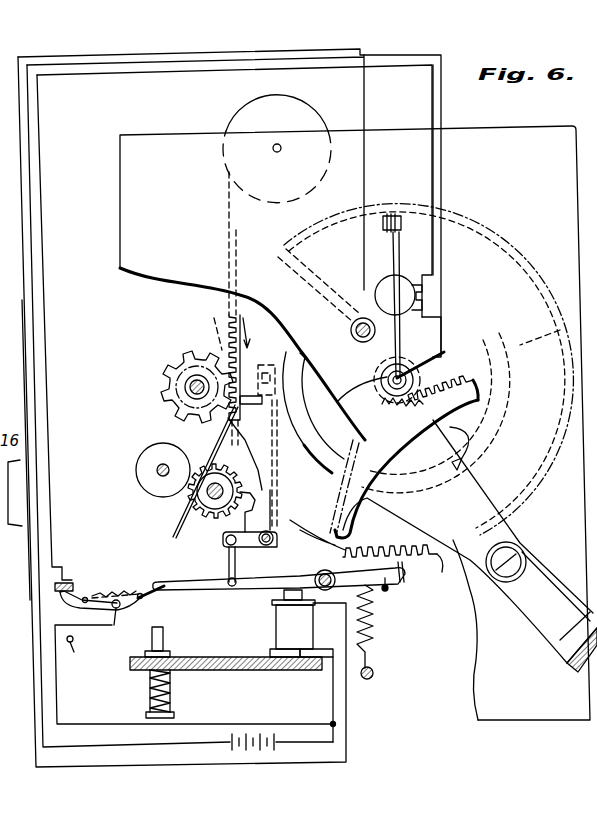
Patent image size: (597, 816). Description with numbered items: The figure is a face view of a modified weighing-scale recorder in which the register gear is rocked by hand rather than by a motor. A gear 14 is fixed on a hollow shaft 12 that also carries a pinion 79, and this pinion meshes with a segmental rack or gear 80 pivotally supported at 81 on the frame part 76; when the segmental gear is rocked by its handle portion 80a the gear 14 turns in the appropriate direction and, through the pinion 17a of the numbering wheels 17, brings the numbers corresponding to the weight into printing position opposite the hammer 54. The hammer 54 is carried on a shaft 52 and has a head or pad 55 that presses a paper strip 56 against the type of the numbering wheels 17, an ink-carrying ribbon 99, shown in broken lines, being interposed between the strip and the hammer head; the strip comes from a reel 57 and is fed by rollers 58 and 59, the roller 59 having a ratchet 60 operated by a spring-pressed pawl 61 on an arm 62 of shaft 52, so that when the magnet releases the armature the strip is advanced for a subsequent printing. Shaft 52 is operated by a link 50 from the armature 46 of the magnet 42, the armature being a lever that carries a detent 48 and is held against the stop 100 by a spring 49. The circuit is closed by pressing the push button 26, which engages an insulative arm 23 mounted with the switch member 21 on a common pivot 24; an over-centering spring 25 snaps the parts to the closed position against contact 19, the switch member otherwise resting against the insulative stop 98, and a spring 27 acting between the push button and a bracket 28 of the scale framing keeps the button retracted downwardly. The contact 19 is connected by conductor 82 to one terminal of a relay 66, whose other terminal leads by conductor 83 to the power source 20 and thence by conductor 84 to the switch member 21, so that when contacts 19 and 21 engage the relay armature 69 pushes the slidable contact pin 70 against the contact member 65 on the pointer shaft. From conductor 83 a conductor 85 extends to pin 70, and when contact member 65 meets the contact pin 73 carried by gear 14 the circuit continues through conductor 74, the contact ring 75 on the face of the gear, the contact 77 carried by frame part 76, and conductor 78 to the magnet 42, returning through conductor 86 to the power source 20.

The hollow shaft 12 is at (376, 376).
The gear 14 is at (442, 560).
The numbering wheels 17 is at (182, 348).
The pinion of register devices 17a is at (205, 324).
The contact 19 is at (68, 582).
The power source 20 is at (264, 752).
The switch member 21 is at (90, 592).
The arm 23 is at (150, 596).
The pivot 24 is at (120, 612).
The over-centering spring 25 is at (118, 590).
The push button 26 is at (146, 708).
The spring 27 is at (172, 698).
The bracket 28 is at (240, 670).
The magnet 42 is at (301, 628).
The armature 46 is at (250, 600).
The detent 48 is at (404, 584).
The spring 49 is at (375, 626).
The link 50 is at (226, 560).
The shaft 52 is at (274, 542).
The hammer 54 is at (280, 468).
The hammer head 55 is at (259, 356).
The paper strip 56 is at (226, 296).
The reel 57 is at (240, 112).
The feeding roller 58 is at (155, 460).
The feeding roller 59 is at (196, 512).
The ratchet 60 is at (236, 425).
The pawl 61 is at (236, 448).
The arm 62 is at (245, 546).
The contact member 65 is at (300, 302).
The relay 66 is at (404, 312).
The relay armature 69 is at (420, 347).
The slidable contact pin 70 is at (346, 414).
The contact pin 73 is at (396, 212).
The conductor 74 is at (400, 230).
The contact ring 75 is at (283, 465).
The frame part 76 is at (550, 642).
The contact 77 is at (350, 265).
The conductor 78 is at (175, 52).
The pinion 79 is at (440, 378).
The segmental rack 80 is at (486, 398).
The handle portion 80a is at (566, 658).
The pivot 81 is at (522, 548).
The conductor 82 is at (50, 455).
The conductor 83 is at (443, 176).
The conductor 84 is at (228, 724).
The conductor 85 is at (440, 330).
The conductor 86 is at (332, 690).
The insulative stop 98 is at (71, 653).
The ink-carrying ribbon 99 is at (251, 408).
The stop 100 is at (392, 597).